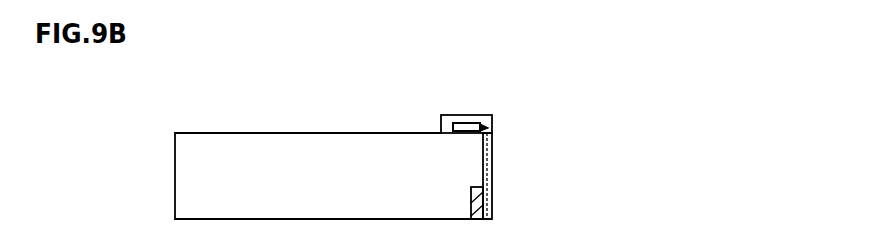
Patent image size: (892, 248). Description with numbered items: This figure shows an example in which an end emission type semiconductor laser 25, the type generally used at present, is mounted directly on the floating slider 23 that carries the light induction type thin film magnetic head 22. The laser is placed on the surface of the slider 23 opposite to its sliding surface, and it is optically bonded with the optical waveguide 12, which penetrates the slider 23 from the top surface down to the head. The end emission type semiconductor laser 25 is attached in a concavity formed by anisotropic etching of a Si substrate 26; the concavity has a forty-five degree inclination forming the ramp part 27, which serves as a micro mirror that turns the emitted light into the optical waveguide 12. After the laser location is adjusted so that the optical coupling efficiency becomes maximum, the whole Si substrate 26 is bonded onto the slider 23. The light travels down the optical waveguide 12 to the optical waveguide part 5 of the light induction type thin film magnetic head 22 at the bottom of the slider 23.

The slider 23 is at (262, 163).
The Si substrate 26 is at (443, 114).
The end emission type semiconductor laser 25 is at (462, 123).
The ramp part 27 is at (481, 124).
The optical waveguide 12 is at (486, 170).
The light induction type thin film magnetic head 22 is at (489, 205).
The optical waveguide part 5 is at (493, 213).